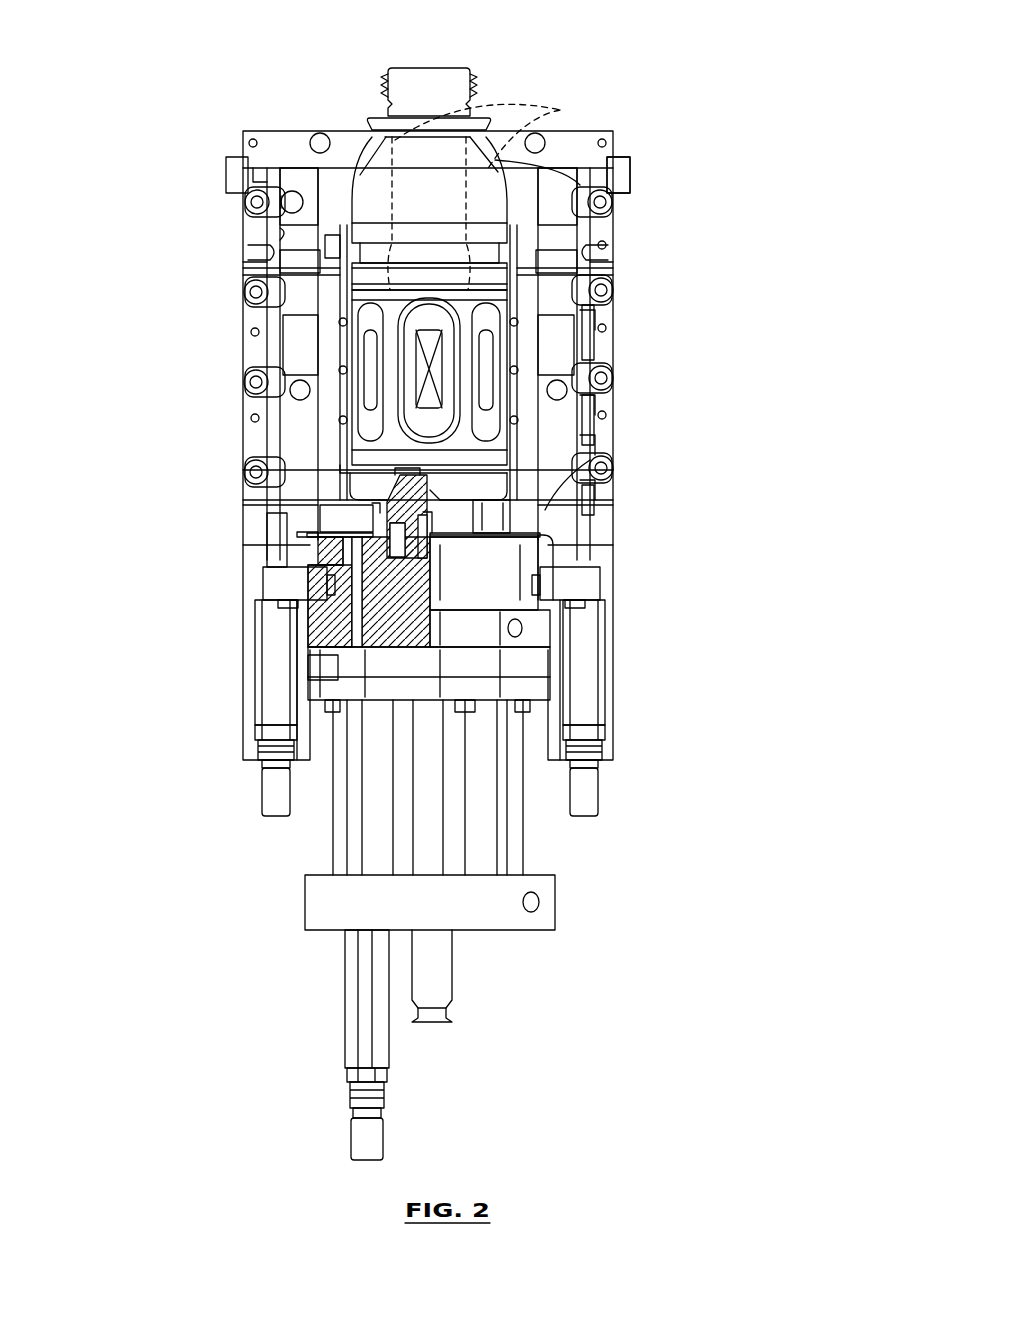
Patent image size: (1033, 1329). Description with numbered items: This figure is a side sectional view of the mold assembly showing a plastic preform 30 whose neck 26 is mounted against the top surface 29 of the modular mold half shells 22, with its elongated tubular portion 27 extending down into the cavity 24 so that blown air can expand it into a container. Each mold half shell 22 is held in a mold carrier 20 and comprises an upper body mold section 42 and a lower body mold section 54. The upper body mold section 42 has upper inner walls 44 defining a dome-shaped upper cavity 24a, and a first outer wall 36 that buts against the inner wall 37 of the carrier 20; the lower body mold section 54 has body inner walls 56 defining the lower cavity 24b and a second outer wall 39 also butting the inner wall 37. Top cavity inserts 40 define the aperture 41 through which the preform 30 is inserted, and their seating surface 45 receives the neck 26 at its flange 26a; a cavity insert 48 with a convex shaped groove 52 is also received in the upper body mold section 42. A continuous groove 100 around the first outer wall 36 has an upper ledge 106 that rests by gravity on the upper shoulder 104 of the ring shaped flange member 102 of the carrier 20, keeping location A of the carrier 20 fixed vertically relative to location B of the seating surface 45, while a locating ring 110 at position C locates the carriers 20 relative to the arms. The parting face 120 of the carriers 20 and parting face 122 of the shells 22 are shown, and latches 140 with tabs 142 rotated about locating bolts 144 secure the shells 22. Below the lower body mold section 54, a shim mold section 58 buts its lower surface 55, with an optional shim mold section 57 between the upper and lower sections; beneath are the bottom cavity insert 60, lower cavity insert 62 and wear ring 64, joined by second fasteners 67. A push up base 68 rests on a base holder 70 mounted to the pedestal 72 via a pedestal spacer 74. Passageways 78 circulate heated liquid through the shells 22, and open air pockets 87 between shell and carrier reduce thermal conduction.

The mold carrier 20 is at (628, 128).
The modular mold half shell 22 is at (310, 128).
The cavity 24 is at (598, 294).
The upper cavity 24a is at (605, 194).
The lower cavity 24b is at (612, 423).
The neck 26 is at (476, 98).
The flange 26a is at (373, 115).
The elongated tubular portion 27 is at (565, 138).
The top surface 29 is at (285, 110).
The plastic preform 30 is at (475, 60).
The first outer wall 36 is at (268, 130).
The inner wall 37 is at (240, 155).
The second outer wall 39 is at (250, 370).
The top cavity insert 40 is at (567, 140).
The aperture 41 is at (436, 130).
The upper body mold section 42 is at (140, 247).
The upper inner walls 44 is at (368, 196).
The seating surface 45 is at (513, 110).
The cavity insert 48 is at (333, 235).
The convex shaped groove 52 is at (375, 232).
The lower body mold section 54 is at (210, 442).
The lower surface 55 is at (612, 442).
The body inner walls 56 is at (345, 480).
The shim mold section 57 is at (280, 280).
The shim mold section 58 is at (595, 505).
The bottom cavity insert 60 is at (630, 512).
The lower cavity insert 62 is at (300, 532).
The wear ring 64 is at (590, 592).
The second fasteners 67 is at (290, 607).
The push up base 68 is at (560, 535).
The base holder 70 is at (545, 642).
The pedestal 72 is at (528, 847).
The pedestal spacer 74 is at (560, 667).
The passageways 78 is at (262, 802).
The open air pockets 87 is at (620, 300).
The groove 100 is at (277, 243).
The flange member 102 is at (293, 272).
The upper shoulder 104 is at (275, 228).
The upper ledge 106 is at (748, 180).
The locating ring 110 is at (640, 172).
The parting face 120 is at (606, 347).
The parting face 122 is at (605, 324).
The latches 140 is at (610, 377).
The tabs 142 is at (620, 394).
The locating bolts 144 is at (618, 493).
The location A is at (628, 248).
The location B is at (365, 110).
The position C is at (640, 162).